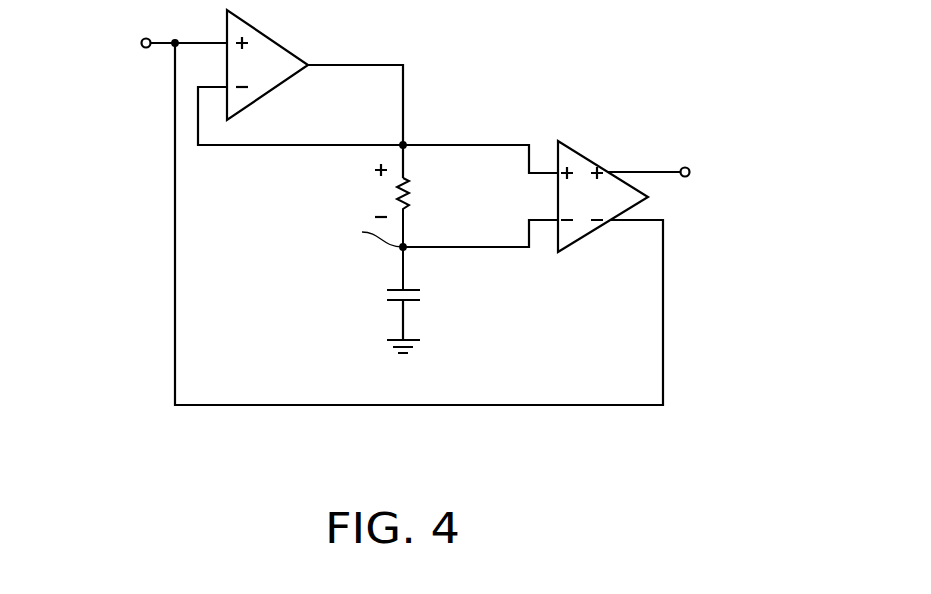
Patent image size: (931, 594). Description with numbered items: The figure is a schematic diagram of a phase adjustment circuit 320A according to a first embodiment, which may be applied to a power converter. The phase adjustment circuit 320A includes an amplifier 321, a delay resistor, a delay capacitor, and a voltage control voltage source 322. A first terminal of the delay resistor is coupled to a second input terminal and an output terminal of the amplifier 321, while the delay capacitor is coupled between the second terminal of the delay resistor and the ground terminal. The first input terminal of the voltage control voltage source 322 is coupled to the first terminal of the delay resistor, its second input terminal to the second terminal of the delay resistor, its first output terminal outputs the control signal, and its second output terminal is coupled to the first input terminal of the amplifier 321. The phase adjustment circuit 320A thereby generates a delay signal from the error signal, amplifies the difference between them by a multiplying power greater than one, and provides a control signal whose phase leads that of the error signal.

The phase adjustment circuit 320A is at (449, 217).
The amplifier 321 is at (278, 42).
The voltage control voltage source 322 is at (586, 154).